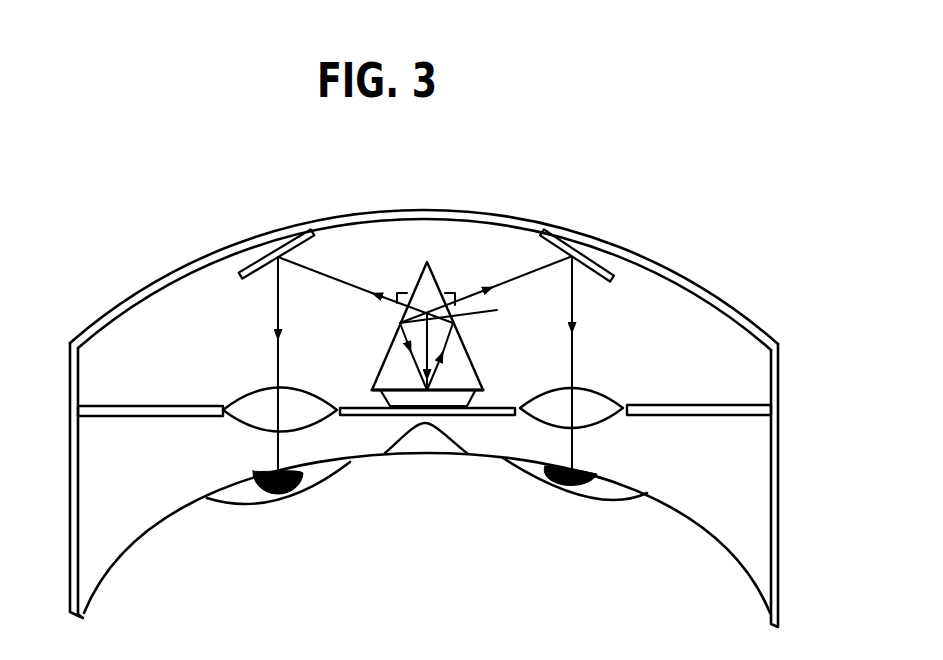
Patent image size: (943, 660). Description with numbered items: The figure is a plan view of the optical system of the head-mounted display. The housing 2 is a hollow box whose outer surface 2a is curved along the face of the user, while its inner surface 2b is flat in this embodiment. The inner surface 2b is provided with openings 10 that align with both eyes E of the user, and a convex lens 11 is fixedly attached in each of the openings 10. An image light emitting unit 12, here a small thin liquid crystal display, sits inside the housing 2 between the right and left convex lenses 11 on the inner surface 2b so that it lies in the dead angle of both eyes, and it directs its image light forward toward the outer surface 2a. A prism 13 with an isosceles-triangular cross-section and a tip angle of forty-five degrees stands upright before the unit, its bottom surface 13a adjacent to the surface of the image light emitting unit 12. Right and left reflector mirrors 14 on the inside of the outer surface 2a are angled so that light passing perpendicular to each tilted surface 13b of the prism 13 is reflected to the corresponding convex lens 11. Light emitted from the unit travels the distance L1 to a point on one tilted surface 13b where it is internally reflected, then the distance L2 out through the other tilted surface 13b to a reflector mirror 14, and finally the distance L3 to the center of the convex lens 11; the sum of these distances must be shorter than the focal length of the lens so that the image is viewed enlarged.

The housing 2 is at (440, 418).
The outer surface 2a is at (663, 258).
The inner surface 2b is at (667, 405).
The openings 10 is at (223, 405).
The convex lens 11 is at (260, 413).
The image light emitting unit 12 is at (453, 400).
The prism 13 is at (412, 351).
The surface corresponding to the bottom side 13a is at (384, 395).
The tilted surfaces 13b is at (383, 365).
The reflector mirrors 14 is at (260, 257).
The eyes E is at (270, 503).
The distance L1 is at (426, 351).
The distance L2 is at (563, 262).
The distance L3 is at (575, 265).